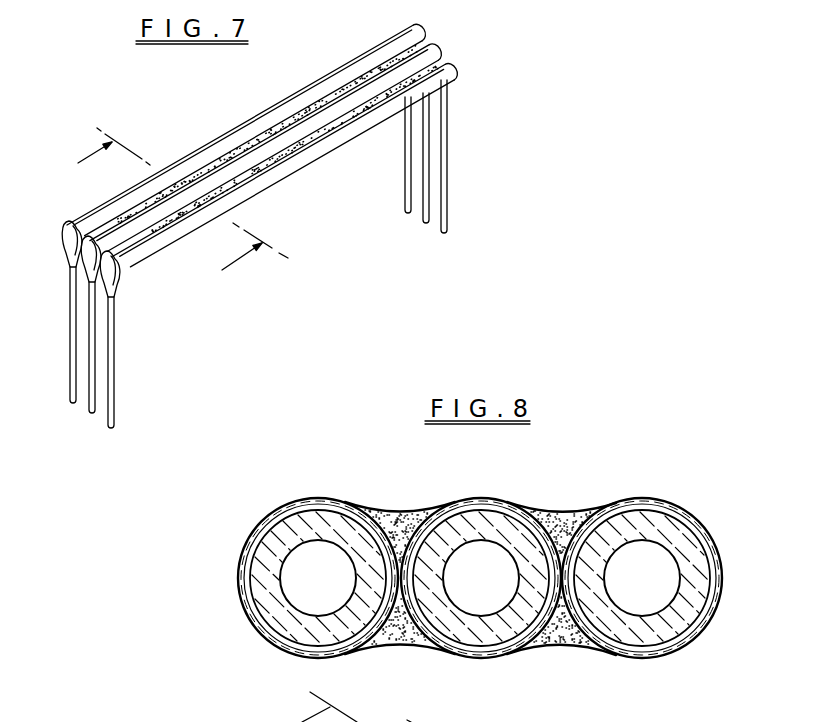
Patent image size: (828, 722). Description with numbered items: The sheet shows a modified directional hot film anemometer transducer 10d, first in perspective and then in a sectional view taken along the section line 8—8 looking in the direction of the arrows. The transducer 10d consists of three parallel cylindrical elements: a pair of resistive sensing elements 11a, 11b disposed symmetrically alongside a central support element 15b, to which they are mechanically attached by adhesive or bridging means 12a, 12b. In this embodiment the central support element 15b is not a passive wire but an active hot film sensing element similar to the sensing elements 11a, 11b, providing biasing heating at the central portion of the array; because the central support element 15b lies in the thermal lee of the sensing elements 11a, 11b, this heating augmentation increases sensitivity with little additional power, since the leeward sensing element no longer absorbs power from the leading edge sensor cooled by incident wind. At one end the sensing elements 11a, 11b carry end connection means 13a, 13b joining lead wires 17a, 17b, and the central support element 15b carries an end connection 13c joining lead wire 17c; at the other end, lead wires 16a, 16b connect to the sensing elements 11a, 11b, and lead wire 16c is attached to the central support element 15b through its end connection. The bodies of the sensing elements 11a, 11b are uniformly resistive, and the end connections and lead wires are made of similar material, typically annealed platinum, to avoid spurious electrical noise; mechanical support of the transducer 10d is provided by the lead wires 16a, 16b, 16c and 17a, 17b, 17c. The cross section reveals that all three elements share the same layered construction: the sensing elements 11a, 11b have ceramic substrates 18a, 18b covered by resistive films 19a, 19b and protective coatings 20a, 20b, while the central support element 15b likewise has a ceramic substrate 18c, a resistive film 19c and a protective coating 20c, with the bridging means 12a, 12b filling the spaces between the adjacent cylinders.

In FIG. 7, the modified embodiment of the transducer 10d is at (180, 149).
In FIG. 8, the modified embodiment of the transducer 10d is at (507, 659).
In FIG. 8, the cylindrical sensing element 11a is at (283, 652).
In FIG. 8, the cylindrical sensing element 11b is at (647, 662).
In FIG. 8, the adhesive or bridging means 12a is at (402, 521).
In FIG. 8, the adhesive or bridging means 12b is at (556, 516).
In FIG. 7, the end connection means 13a is at (70, 239).
In FIG. 7, the end connection means 13b is at (122, 279).
In FIG. 7, the end connection 13c is at (90, 267).
In FIG. 8, the central support element 15b is at (462, 496).
In FIG. 7, the connecting lead wire 16a is at (407, 183).
In FIG. 7, the connecting lead wire 16b is at (447, 202).
In FIG. 7, the lead wire 16c is at (427, 224).
In FIG. 7, the connecting lead wire 17a is at (71, 362).
In FIG. 7, the connecting lead wire 17b is at (117, 401).
In FIG. 7, the lead wire 17c is at (95, 415).
In FIG. 8, the ceramic substrate 18a is at (268, 614).
In FIG. 8, the ceramic substrate 18b is at (690, 577).
In FIG. 8, the ceramic substrate 18c is at (476, 636).
In FIG. 8, the resistive film 19a is at (272, 521).
In FIG. 8, the resistive film 19b is at (697, 525).
In FIG. 8, the resistive film 19c is at (518, 513).
In FIG. 8, the protective coating 20a is at (337, 498).
In FIG. 8, the protective coating 20b is at (671, 507).
In FIG. 8, the protective coating 20c is at (487, 499).
In FIG. 7, the section line 8 is at (176, 212).